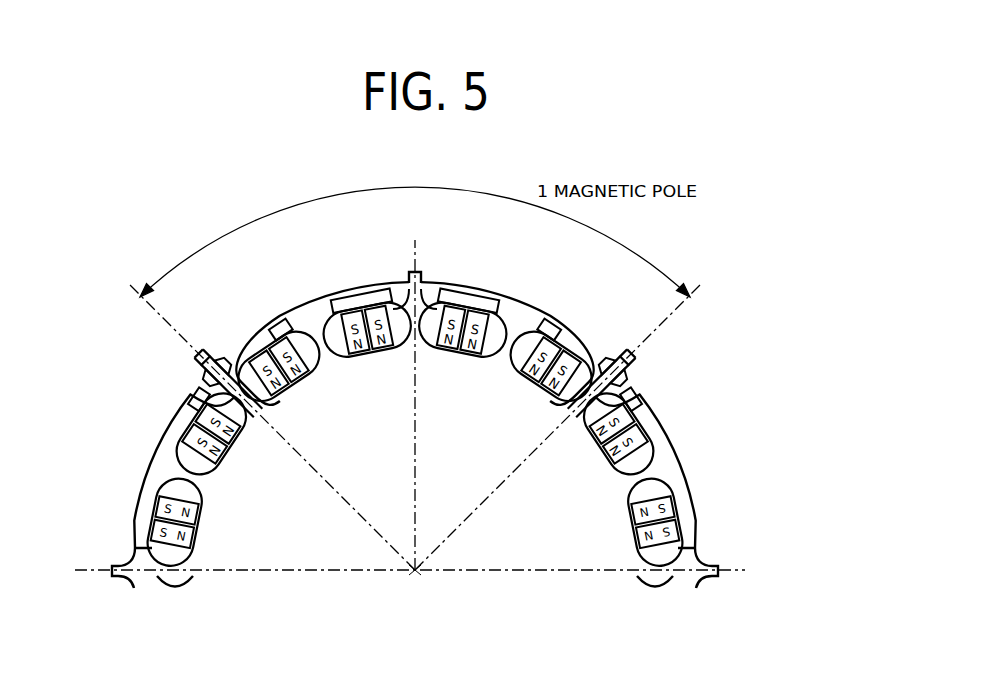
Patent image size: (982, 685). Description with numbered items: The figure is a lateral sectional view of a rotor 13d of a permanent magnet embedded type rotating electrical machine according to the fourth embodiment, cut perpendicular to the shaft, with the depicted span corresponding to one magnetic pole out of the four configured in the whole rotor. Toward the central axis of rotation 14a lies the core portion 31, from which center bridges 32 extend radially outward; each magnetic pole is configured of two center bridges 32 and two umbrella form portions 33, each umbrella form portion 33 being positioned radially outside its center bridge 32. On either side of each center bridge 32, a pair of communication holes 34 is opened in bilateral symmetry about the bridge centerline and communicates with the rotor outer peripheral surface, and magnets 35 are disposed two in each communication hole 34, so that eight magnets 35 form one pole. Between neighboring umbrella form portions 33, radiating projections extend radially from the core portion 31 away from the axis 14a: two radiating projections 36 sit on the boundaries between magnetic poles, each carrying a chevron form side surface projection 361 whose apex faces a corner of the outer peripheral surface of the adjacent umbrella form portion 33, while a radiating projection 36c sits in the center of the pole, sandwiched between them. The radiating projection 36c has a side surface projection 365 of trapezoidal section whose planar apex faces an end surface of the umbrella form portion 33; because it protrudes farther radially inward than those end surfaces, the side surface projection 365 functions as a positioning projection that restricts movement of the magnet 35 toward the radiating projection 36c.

The rotor 13d is at (478, 396).
The central axis of rotation 14a is at (414, 572).
The core portion 31 is at (395, 506).
The center bridge 32 is at (268, 326).
The umbrella form portion 33 is at (310, 310).
The communication hole 34 is at (340, 314).
The magnet 35 is at (280, 390).
The radiating projection 36 is at (200, 370).
The side surface projection 361 is at (204, 360).
The side surface projection 365 is at (438, 287).
The radiating projection 36c is at (411, 272).